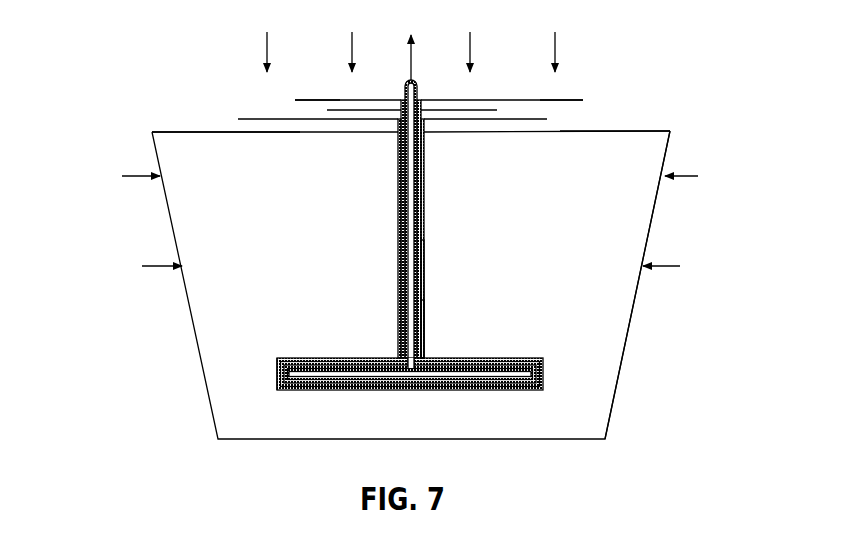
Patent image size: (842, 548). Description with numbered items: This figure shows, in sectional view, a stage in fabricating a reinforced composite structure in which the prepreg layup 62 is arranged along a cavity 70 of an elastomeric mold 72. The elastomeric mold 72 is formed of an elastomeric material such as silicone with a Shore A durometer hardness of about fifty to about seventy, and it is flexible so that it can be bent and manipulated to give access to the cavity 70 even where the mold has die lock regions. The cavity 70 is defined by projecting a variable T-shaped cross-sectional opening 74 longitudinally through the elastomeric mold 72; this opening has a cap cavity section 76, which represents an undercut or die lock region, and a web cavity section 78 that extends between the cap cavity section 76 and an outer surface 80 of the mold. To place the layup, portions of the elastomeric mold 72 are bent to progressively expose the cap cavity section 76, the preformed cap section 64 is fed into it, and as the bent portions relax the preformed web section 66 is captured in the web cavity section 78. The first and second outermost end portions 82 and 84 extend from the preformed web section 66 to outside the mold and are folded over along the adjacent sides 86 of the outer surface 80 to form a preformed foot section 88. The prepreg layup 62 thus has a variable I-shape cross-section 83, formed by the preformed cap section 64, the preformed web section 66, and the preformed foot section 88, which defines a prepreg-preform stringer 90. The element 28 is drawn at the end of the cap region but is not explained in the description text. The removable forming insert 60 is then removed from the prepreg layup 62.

The slot in base 28 is at (528, 375).
The removable forming insert 60 is at (417, 78).
The prepreg layup 62 is at (522, 100).
The preformed cap section 64 is at (458, 390).
The preformed web section 66 is at (398, 213).
The cavity 70 is at (425, 175).
The elastomeric mold 72 is at (607, 367).
The variable T-shaped cross-sectional opening 74 is at (425, 257).
The cap cavity section 76 is at (277, 373).
The web cavity section 78 is at (425, 280).
The outer surface 80 is at (180, 131).
The first outermost end portion 82 is at (318, 100).
The variable I-shape cross-section 83 is at (425, 318).
The second outermost end portion 84 is at (573, 100).
The adjacent sides 86 is at (225, 131).
The preformed foot section 88 is at (508, 100).
The prepreg-preform stringer 90 is at (360, 100).